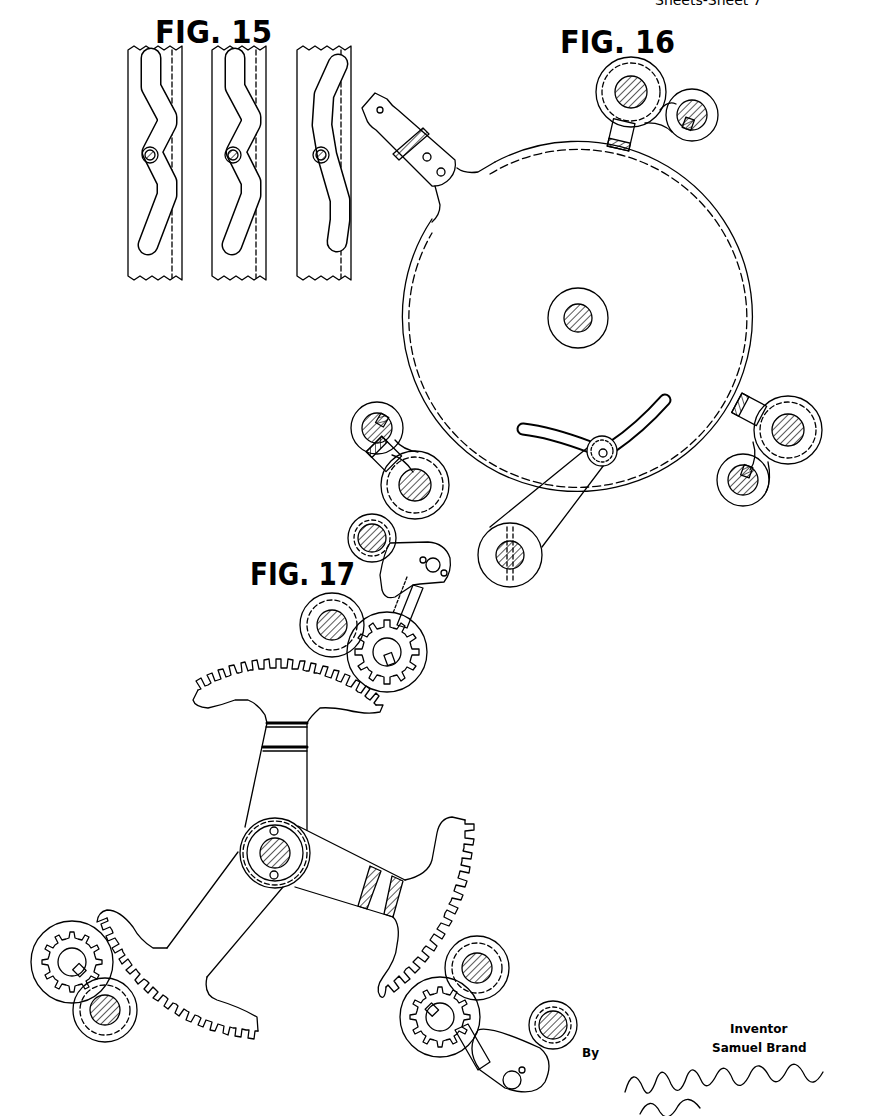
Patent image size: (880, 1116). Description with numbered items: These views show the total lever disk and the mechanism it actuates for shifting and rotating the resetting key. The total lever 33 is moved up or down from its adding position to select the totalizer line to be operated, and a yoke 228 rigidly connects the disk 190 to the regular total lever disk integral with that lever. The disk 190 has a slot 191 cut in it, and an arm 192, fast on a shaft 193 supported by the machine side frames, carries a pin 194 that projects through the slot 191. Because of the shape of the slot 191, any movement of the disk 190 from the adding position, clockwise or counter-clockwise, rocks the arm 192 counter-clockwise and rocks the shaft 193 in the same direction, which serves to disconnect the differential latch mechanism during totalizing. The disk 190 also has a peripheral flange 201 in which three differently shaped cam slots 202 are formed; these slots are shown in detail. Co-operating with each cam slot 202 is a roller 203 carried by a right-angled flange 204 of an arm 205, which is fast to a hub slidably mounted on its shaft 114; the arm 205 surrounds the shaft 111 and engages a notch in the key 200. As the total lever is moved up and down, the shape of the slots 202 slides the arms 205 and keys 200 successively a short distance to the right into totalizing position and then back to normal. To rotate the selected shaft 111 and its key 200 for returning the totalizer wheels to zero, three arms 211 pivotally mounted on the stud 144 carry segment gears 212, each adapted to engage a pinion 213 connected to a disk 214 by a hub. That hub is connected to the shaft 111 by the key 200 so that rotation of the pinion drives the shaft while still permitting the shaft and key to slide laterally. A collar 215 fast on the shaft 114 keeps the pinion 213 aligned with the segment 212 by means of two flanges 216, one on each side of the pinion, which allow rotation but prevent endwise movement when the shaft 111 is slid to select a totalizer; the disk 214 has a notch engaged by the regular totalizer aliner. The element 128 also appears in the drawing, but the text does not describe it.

In FIG. 16, the total lever 33 is at (410, 120).
In FIG. 16, the yoke 228 is at (428, 130).
In FIG. 16, the shaft 111 is at (704, 112).
In FIG. 17, the shaft 111 is at (395, 652).
In FIG. 16, the shaft 114 is at (645, 86).
In FIG. 17, the shaft 114 is at (325, 625).
In FIG. 17, the pin 128 is at (360, 540).
In FIG. 16, the stud 144 is at (592, 316).
In FIG. 17, the stud 144 is at (285, 845).
In FIG. 16, the disk 190 is at (712, 228).
In FIG. 16, the slot 191 is at (660, 398).
In FIG. 16, the arm 192 is at (600, 466).
In FIG. 16, the shaft 193 is at (524, 560).
In FIG. 16, the pin 194 is at (597, 437).
In FIG. 16, the key 200 is at (686, 128).
In FIG. 17, the key 200 is at (82, 955).
In FIG. 15, the peripheral flange 201 is at (255, 50).
In FIG. 16, the peripheral flange 201 is at (752, 302).
In FIG. 15, the cam slot 202 is at (315, 123).
In FIG. 15, the roller 203 is at (240, 155).
In FIG. 16, the roller 203 is at (458, 448).
In FIG. 16, the right-angled flange 204 is at (735, 412).
In FIG. 16, the arm 205 is at (613, 120).
In FIG. 17, the arm 211 is at (383, 712).
In FIG. 17, the segment gear 212 is at (440, 822).
In FIG. 17, the pinion 213 is at (414, 664).
In FIG. 17, the disk 214 is at (412, 680).
In FIG. 17, the collar 215 is at (475, 956).
In FIG. 17, the flange 216 is at (505, 975).